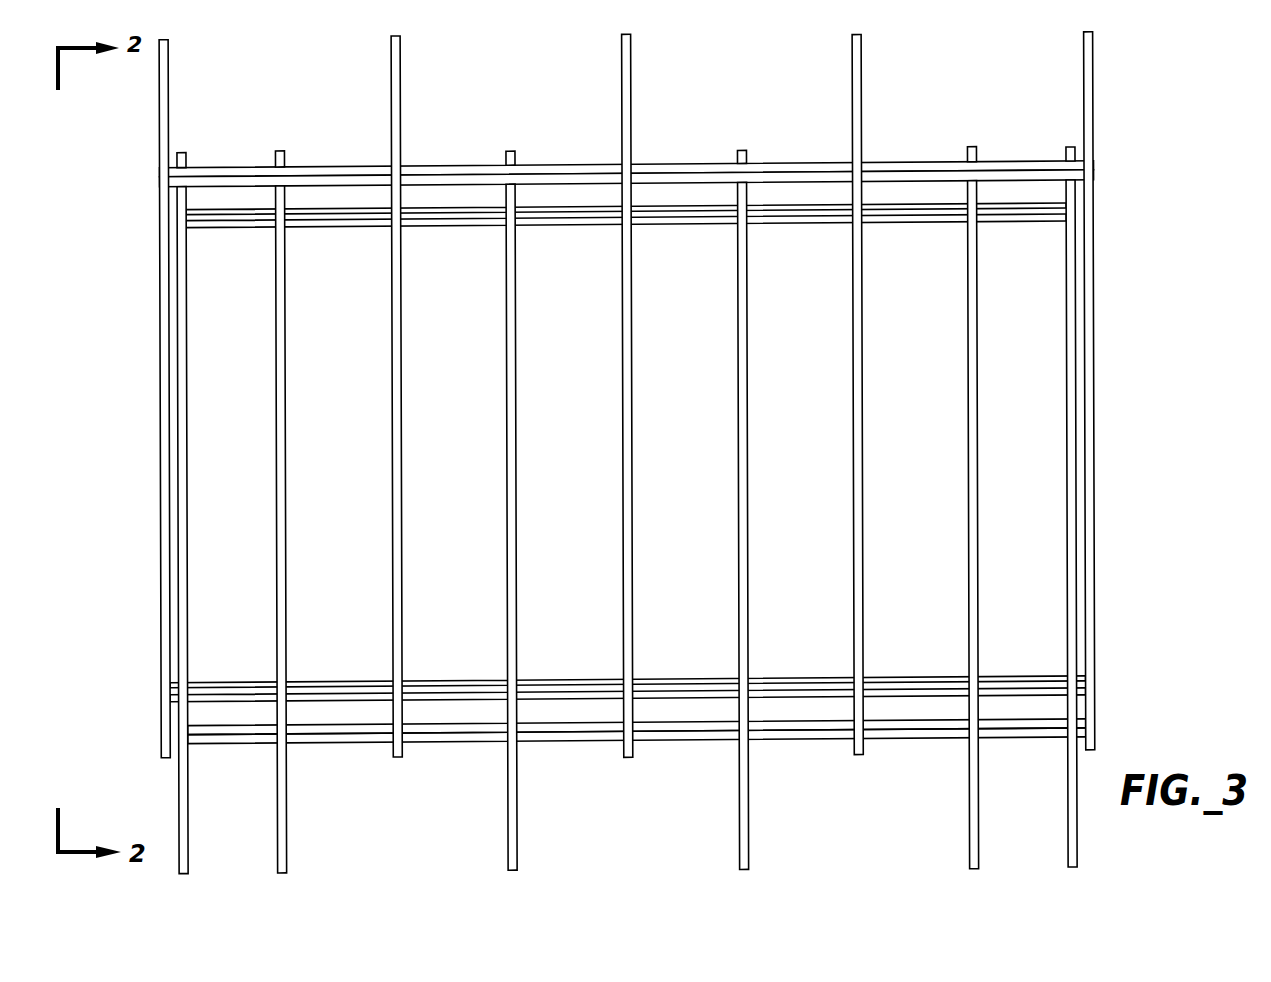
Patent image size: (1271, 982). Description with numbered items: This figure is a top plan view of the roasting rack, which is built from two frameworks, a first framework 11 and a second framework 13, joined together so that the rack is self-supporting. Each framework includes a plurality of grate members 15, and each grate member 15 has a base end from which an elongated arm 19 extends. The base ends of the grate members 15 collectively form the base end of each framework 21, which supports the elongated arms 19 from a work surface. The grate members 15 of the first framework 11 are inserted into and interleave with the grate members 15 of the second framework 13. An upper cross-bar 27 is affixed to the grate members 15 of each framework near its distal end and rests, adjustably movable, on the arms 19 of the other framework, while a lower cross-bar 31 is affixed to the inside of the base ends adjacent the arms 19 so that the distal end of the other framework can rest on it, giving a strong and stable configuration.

The first framework 11 is at (176, 812).
The second framework 13 is at (1099, 117).
The grate member 15 is at (982, 571).
The elongated arm 19 is at (736, 505).
The base end of each framework 21 is at (619, 101).
The upper cross-bar 27 is at (210, 168).
The lower cross-bar 31 is at (303, 229).